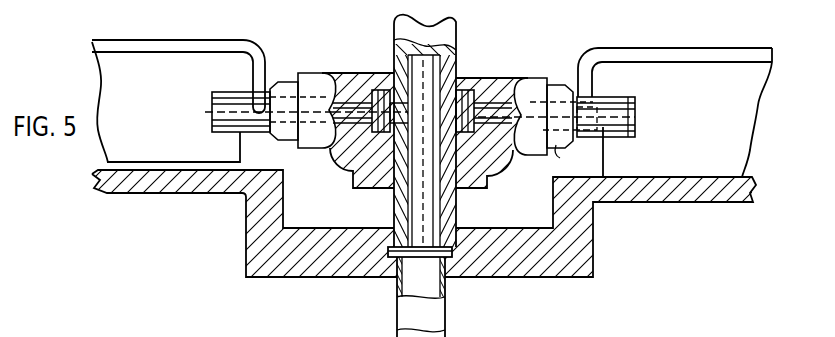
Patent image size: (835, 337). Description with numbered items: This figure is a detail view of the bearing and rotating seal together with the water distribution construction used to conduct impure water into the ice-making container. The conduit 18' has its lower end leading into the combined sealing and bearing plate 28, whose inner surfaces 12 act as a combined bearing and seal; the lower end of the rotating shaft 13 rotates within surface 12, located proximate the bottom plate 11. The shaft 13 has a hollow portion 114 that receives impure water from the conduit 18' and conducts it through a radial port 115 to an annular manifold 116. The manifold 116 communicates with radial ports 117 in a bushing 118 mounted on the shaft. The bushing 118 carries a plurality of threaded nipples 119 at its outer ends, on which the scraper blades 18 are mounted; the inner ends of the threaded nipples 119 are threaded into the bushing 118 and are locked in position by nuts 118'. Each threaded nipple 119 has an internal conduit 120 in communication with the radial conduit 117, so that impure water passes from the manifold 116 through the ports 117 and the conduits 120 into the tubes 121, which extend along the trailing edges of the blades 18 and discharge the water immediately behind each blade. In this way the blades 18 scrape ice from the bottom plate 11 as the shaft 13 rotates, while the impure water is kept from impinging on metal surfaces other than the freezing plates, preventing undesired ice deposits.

The bottom plate 11 is at (672, 192).
The bearing 12 is at (443, 257).
The rotating shaft 13 is at (461, 41).
The scraper blades 18 is at (432, 109).
The conduit 18' is at (442, 297).
The combined sealing and bearing plate 28 is at (373, 292).
The hollow portion 114 is at (432, 196).
The radial port 115 is at (403, 100).
The annular manifold 116 is at (469, 92).
The radial ports 117 is at (337, 76).
The bushing 118 is at (425, 147).
The nuts 118' is at (293, 127).
The threaded nipples 119 is at (216, 103).
The internal conduit 120 is at (573, 140).
The tubes 121 is at (188, 42).